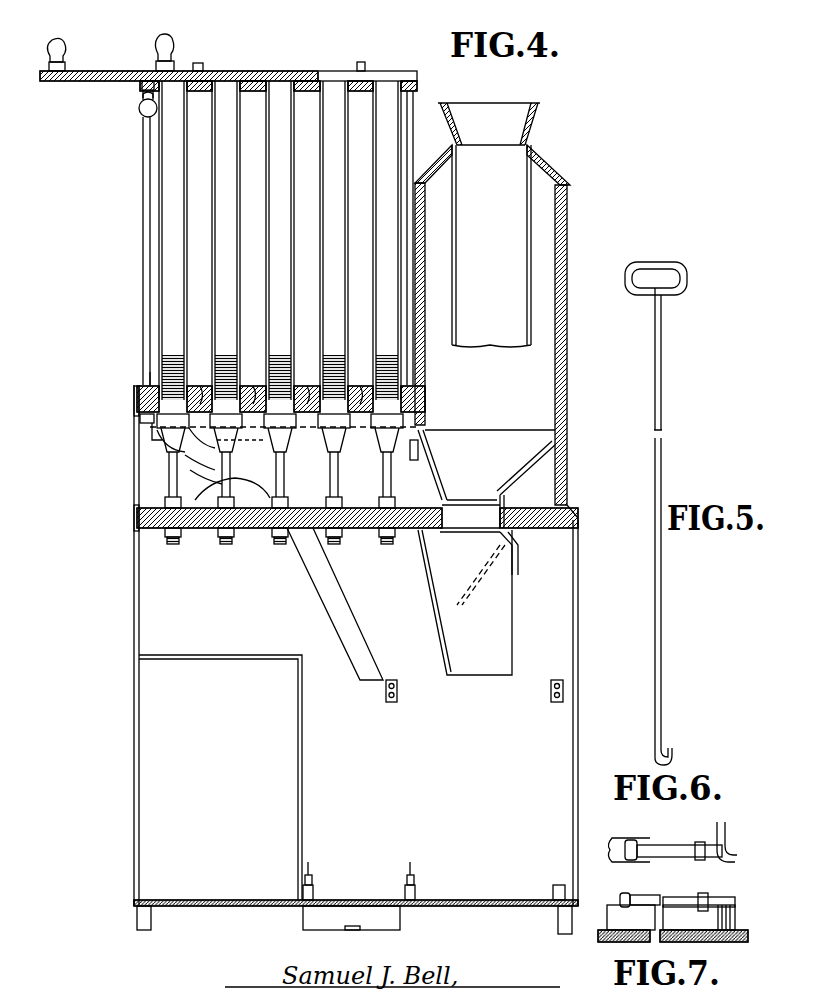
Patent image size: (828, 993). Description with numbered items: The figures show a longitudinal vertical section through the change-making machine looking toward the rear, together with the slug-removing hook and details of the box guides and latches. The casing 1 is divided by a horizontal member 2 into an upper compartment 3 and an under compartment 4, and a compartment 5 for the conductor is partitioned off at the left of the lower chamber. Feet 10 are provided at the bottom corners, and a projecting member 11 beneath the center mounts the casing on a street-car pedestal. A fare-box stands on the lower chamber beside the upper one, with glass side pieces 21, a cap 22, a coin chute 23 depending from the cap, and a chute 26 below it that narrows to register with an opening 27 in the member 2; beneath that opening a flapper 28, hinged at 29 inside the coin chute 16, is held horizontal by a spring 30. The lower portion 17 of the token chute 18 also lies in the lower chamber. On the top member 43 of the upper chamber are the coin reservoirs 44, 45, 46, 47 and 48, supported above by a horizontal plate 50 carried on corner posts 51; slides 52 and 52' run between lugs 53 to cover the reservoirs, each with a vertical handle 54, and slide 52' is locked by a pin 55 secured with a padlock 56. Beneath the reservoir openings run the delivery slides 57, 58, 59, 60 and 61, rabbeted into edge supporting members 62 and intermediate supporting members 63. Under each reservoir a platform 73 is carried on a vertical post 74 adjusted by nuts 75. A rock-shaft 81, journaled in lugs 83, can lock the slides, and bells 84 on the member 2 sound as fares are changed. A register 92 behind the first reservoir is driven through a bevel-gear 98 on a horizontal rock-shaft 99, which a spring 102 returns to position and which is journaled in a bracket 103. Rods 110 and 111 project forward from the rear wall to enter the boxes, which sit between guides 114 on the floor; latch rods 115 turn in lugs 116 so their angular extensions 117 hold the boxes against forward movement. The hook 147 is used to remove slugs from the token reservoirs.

In FIG. 4, the casing 1 is at (579, 745).
In FIG. 7, the casing 1 is at (742, 942).
In FIG. 4, the horizontal member 2 is at (265, 536).
In FIG. 4, the upper compartment 3 is at (178, 461).
In FIG. 4, the under compartment 4 is at (356, 830).
In FIG. 4, the compartment 5 is at (220, 777).
In FIG. 4, the feet 10 is at (152, 932).
In FIG. 4, the projecting member 11 is at (336, 932).
In FIG. 4, the coin chute 16 is at (465, 602).
In FIG. 4, the lower portion of token chute 17 is at (360, 640).
In FIG. 4, the token chute 18 is at (237, 461).
In FIG. 4, the glass side pieces 21 is at (568, 338).
In FIG. 4, the cap 22 is at (541, 131).
In FIG. 4, the coin chute 23 is at (491, 246).
In FIG. 4, the chute 26 is at (565, 455).
In FIG. 4, the opening 27 is at (480, 520).
In FIG. 4, the flapper 28 is at (455, 532).
In FIG. 4, the hinge 29 is at (518, 540).
In FIG. 4, the spring 30 is at (506, 566).
In FIG. 4, the top member 43 is at (150, 392).
In FIG. 4, the coin reservoir 44 is at (160, 290).
In FIG. 4, the coin reservoir 45 is at (214, 290).
In FIG. 4, the coin reservoir 46 is at (268, 290).
In FIG. 4, the coin reservoir 47 is at (322, 290).
In FIG. 4, the coin reservoir 48 is at (375, 290).
In FIG. 4, the horizontal plate 50 is at (240, 80).
In FIG. 4, the corner posts 51 is at (144, 147).
In FIG. 4, the slide 52 is at (228, 91).
In FIG. 4, the slide 52' is at (319, 58).
In FIG. 4, the lugs 53 is at (198, 63).
In FIG. 4, the vertical handle 54 is at (60, 50).
In FIG. 4, the pin 55 is at (140, 92).
In FIG. 4, the padlock 56 is at (139, 109).
In FIG. 4, the delivery slide 57 is at (136, 400).
In FIG. 4, the delivery slide 58 is at (202, 384).
In FIG. 4, the delivery slide 59 is at (254, 390).
In FIG. 4, the delivery slide 60 is at (308, 394).
In FIG. 4, the delivery slide 61 is at (362, 394).
In FIG. 4, the supporting members 62 is at (139, 419).
In FIG. 4, the supporting members 63 is at (307, 461).
In FIG. 4, the platform 73 is at (178, 442).
In FIG. 4, the vertical post 74 is at (183, 458).
In FIG. 4, the nuts 75 is at (160, 533).
In FIG. 4, the rock-shaft 81 is at (160, 434).
In FIG. 4, the lug 83 is at (150, 428).
In FIG. 4, the bells 84 is at (194, 542).
In FIG. 4, the register 92 is at (150, 376).
In FIG. 4, the bevel-gear 98 is at (188, 470).
In FIG. 4, the horizontal rock-shaft 99 is at (241, 452).
In FIG. 4, the spring 102 is at (420, 455).
In FIG. 4, the bracket 103 is at (200, 488).
In FIG. 4, the rod 110 is at (551, 692).
In FIG. 4, the rod 111 is at (398, 692).
In FIG. 4, the guides 114 is at (315, 896).
In FIG. 6, the guides 114 is at (672, 845).
In FIG. 7, the guides 114 is at (662, 932).
In FIG. 6, the latch rod 115 is at (657, 862).
In FIG. 7, the latch rod 115 is at (656, 900).
In FIG. 4, the lugs 116 is at (313, 884).
In FIG. 6, the lugs 116 is at (630, 843).
In FIG. 7, the lugs 116 is at (620, 898).
In FIG. 4, the angular extension 117 is at (373, 860).
In FIG. 6, the angular extension 117 is at (729, 836).
In FIG. 5, the hook 147 is at (662, 442).